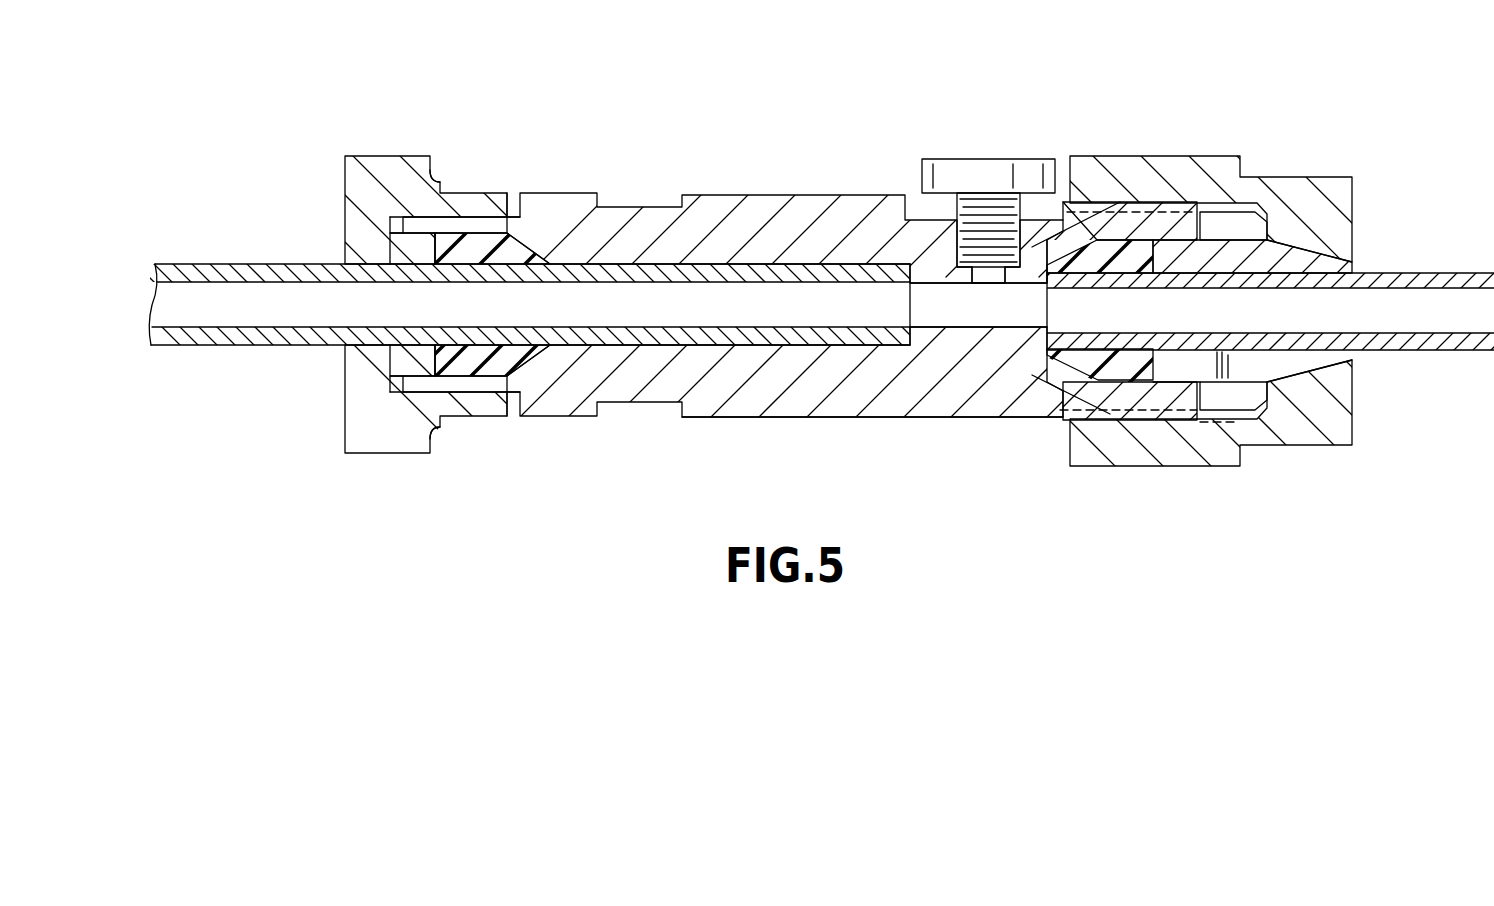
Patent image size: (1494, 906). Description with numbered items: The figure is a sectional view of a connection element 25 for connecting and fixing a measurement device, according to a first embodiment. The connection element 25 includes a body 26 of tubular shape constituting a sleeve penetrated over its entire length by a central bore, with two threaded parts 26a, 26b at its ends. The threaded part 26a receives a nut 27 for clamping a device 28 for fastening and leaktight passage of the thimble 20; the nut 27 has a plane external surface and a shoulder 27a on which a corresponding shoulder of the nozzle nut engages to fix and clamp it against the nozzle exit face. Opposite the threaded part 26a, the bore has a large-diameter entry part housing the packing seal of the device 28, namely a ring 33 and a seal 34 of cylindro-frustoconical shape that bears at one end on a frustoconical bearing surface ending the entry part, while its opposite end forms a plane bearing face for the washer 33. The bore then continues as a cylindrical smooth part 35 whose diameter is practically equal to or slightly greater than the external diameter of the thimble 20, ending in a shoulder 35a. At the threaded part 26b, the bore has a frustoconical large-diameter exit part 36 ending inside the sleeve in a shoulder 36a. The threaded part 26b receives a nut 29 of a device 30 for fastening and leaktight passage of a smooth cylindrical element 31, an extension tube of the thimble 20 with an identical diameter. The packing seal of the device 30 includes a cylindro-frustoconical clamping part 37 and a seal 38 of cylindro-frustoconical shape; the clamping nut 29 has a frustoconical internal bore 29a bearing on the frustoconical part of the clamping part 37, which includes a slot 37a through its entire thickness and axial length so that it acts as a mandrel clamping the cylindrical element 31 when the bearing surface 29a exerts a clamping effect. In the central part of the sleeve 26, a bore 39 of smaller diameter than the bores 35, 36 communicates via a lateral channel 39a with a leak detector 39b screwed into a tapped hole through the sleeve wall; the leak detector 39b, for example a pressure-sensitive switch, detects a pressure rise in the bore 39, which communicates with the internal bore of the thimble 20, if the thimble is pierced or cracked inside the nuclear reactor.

The thimble 20 is at (230, 333).
The connection element 25 is at (672, 112).
The body 26 is at (748, 202).
The threaded part 26a is at (448, 383).
The threaded part 26b is at (1115, 432).
The nut 27 is at (385, 425).
The shoulder 27a is at (437, 177).
The device for fastening and leaktight passage 28 is at (482, 186).
The nut 29 is at (1320, 430).
The frustoconical internal bore 29a is at (1340, 365).
The device for fastening and leaktight passage 30 is at (1117, 143).
The smooth cylindrical element 31 is at (1428, 272).
The ring 33 is at (433, 362).
The seal 34 is at (483, 363).
The cylindrical smooth part 35 is at (808, 348).
The shoulder 35a is at (898, 345).
The large-diameter exit part 36 is at (1075, 362).
The shoulder 36a is at (1037, 333).
The clamping part 37 is at (1237, 257).
The slot 37a is at (1250, 385).
The seal 38 is at (1130, 248).
The bore 39 is at (937, 292).
The lateral channel 39a is at (982, 280).
The leak detector 39b is at (1018, 182).